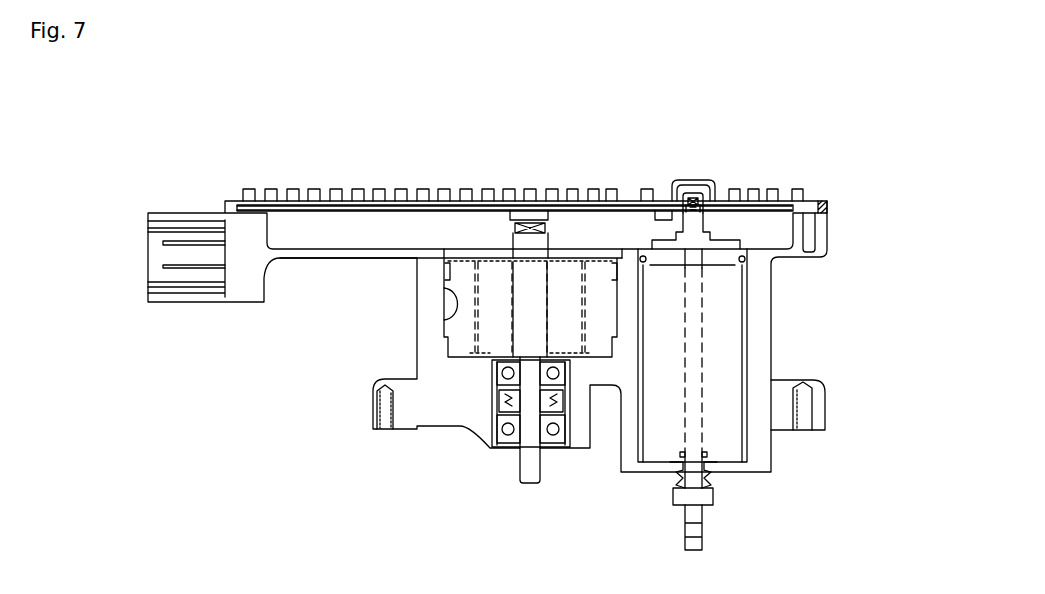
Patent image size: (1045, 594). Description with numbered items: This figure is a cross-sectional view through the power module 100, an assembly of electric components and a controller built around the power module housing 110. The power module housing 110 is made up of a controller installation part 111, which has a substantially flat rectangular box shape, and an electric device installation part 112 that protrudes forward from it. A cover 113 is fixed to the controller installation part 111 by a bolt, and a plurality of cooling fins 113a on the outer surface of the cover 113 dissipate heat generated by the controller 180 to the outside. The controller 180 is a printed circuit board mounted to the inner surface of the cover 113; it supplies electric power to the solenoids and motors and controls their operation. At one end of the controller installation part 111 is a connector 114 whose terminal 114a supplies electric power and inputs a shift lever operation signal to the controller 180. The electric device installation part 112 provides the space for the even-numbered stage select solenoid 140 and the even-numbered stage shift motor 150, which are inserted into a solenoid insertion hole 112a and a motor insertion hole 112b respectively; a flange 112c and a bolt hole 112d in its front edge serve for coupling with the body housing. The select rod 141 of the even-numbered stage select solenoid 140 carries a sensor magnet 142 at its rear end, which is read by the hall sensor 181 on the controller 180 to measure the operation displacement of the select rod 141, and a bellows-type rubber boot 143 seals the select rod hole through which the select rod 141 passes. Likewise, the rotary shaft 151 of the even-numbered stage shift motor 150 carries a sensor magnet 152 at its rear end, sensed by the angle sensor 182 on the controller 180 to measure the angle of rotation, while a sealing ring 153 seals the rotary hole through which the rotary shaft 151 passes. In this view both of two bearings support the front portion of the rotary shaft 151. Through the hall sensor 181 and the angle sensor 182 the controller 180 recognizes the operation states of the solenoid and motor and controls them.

The power module 100 is at (412, 181).
The power module housing 110 is at (904, 227).
The controller installation part 111 is at (827, 230).
The electric device installation part 112 is at (773, 325).
The solenoid insertion hole 112a is at (775, 427).
The motor insertion hole 112b is at (444, 321).
The flange 112c is at (368, 410).
The bolt hole 112d is at (383, 423).
The cover 113 is at (463, 188).
The cooling fins 113a is at (611, 189).
The connector 114 is at (188, 212).
The connector terminals 114a is at (163, 267).
The even-numbered stage select solenoid 140 is at (655, 448).
The select rod 141 is at (700, 515).
The sensor magnet 142 is at (722, 197).
The bellows-type rubber boot 143 is at (713, 477).
The even-numbered stage shift motor 150 is at (488, 345).
The rotary shaft 151 is at (537, 467).
The sensor magnet 152 is at (513, 227).
The sealing ring 153 is at (497, 402).
The controller 180 is at (311, 204).
The hall sensor 181 is at (661, 209).
The angle sensor 182 is at (530, 212).